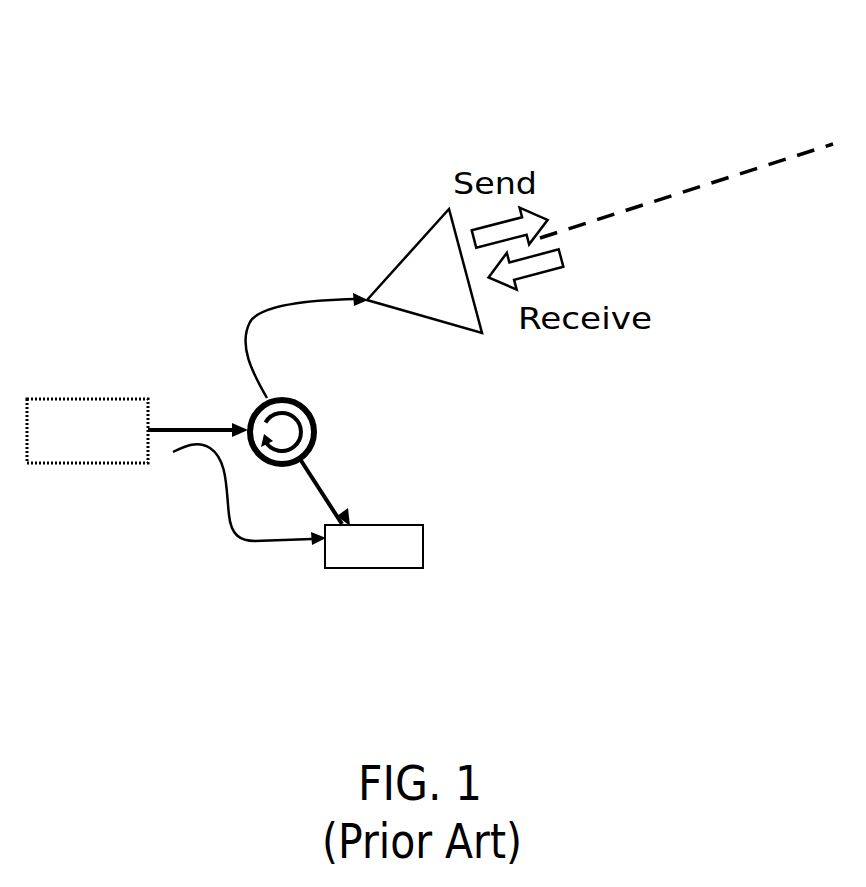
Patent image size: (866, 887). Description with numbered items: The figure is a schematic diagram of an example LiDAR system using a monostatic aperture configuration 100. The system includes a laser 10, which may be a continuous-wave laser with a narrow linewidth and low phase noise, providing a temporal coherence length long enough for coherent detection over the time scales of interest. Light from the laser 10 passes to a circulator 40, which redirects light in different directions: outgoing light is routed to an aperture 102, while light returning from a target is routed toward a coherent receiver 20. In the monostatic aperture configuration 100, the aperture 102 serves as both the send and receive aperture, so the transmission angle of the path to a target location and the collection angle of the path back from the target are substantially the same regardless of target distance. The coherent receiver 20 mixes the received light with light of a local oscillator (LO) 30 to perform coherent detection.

The monostatic aperture configuration 100 is at (203, 124).
The laser 10 is at (77, 399).
The circulator 40 is at (308, 408).
The aperture 102 is at (456, 292).
The coherent receiver 20 is at (383, 558).
The local oscillator (LO) 30 is at (247, 507).